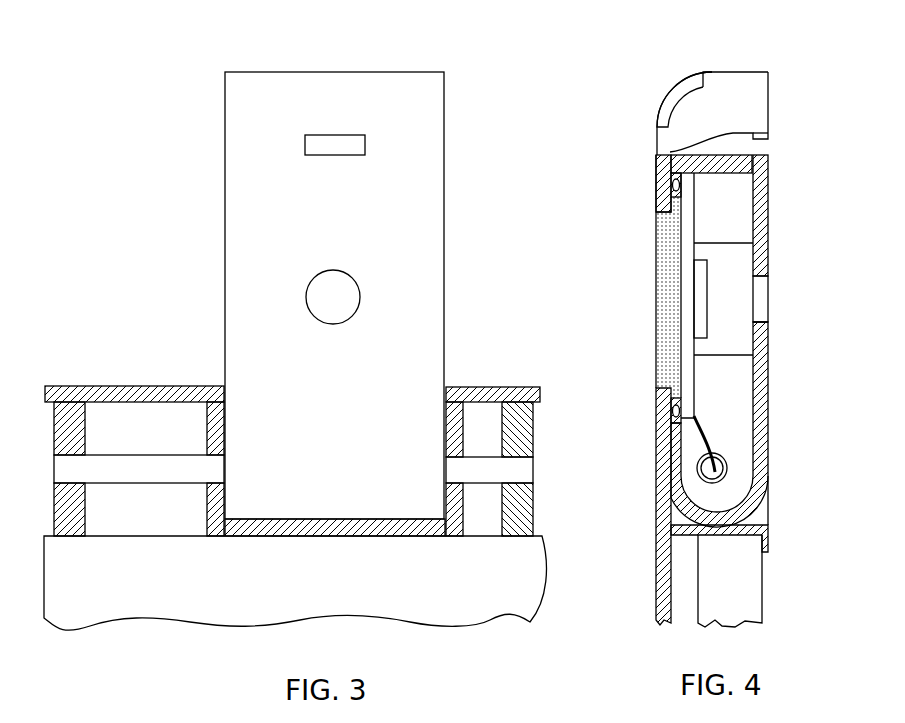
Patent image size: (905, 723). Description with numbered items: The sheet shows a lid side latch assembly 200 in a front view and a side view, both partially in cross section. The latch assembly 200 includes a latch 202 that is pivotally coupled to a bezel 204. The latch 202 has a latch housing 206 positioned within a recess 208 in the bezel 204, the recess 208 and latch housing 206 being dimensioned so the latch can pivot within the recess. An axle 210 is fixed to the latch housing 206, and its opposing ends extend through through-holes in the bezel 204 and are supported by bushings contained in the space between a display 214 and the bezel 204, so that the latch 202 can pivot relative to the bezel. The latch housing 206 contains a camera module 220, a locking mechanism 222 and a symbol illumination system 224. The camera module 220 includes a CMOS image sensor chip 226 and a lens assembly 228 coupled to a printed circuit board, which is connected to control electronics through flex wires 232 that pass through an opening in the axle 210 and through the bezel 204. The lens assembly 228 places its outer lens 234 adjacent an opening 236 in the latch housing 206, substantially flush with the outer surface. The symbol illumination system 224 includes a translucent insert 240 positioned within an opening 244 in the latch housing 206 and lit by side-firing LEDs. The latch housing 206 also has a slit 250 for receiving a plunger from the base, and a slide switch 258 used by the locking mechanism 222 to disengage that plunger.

In FIG. 3, the latch assembly 200 is at (138, 156).
In FIG. 3, the latch 202 is at (345, 72).
In FIG. 4, the latch 202 is at (740, 72).
In FIG. 3, the bezel 204 is at (147, 386).
In FIG. 4, the bezel 204 is at (653, 592).
In FIG. 3, the latch housing 206 is at (423, 248).
In FIG. 4, the latch housing 206 is at (768, 462).
In FIG. 3, the recess 208 is at (461, 367).
In FIG. 4, the recess 208 is at (760, 515).
In FIG. 3, the axle 210 is at (105, 483).
In FIG. 4, the axle 210 is at (698, 477).
In FIG. 3, the display 214 is at (497, 574).
In FIG. 4, the display 214 is at (733, 595).
In FIG. 4, the camera module 220 is at (728, 243).
In FIG. 4, the locking mechanism 222 is at (745, 107).
In FIG. 4, the symbol illumination system 224 is at (653, 245).
In FIG. 4, the CMOS image sensor chip 226 is at (703, 272).
In FIG. 4, the lens assembly 228 is at (725, 343).
In FIG. 4, the flex wires 232 is at (702, 438).
In FIG. 3, the outer lens 234 is at (337, 297).
In FIG. 4, the outer lens 234 is at (770, 303).
In FIG. 3, the opening 236 is at (313, 278).
In FIG. 4, the opening 236 is at (768, 323).
In FIG. 4, the insert 240 is at (663, 325).
In FIG. 4, the opening 244 is at (660, 387).
In FIG. 3, the slit 250 is at (365, 145).
In FIG. 4, the slide switch 258 is at (682, 88).